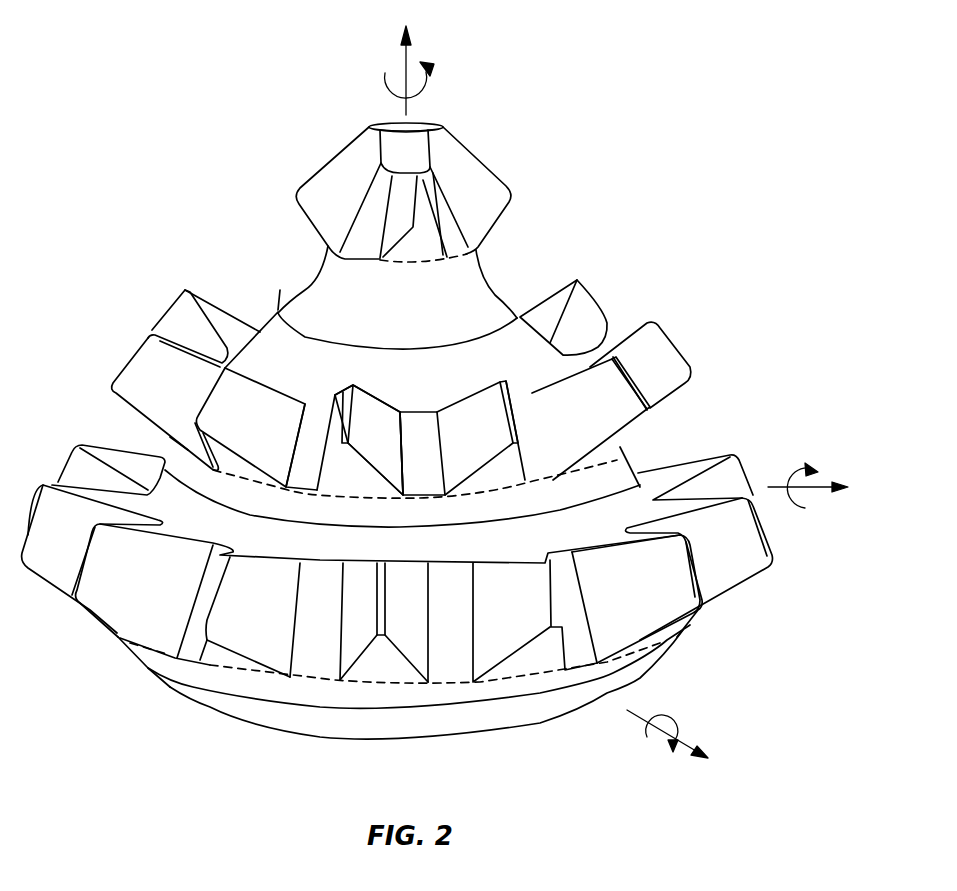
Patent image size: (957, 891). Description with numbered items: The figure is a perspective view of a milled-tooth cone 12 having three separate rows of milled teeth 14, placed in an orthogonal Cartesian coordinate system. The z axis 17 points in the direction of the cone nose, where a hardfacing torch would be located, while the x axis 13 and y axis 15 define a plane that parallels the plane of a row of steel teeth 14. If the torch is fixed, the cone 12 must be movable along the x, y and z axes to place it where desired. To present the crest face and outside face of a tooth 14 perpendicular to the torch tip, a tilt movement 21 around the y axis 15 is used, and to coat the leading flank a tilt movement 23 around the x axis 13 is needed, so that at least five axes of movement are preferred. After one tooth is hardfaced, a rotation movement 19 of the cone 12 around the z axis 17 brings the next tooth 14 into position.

The milled-tooth cone 12 is at (598, 203).
The x axis 13 is at (643, 721).
The teeth 14 is at (333, 413).
The y axis 15 is at (830, 488).
The z axis 17 is at (400, 50).
The rotation movement 19 is at (430, 70).
The tilt movement 21 is at (808, 462).
The tilt movement 23 is at (676, 718).